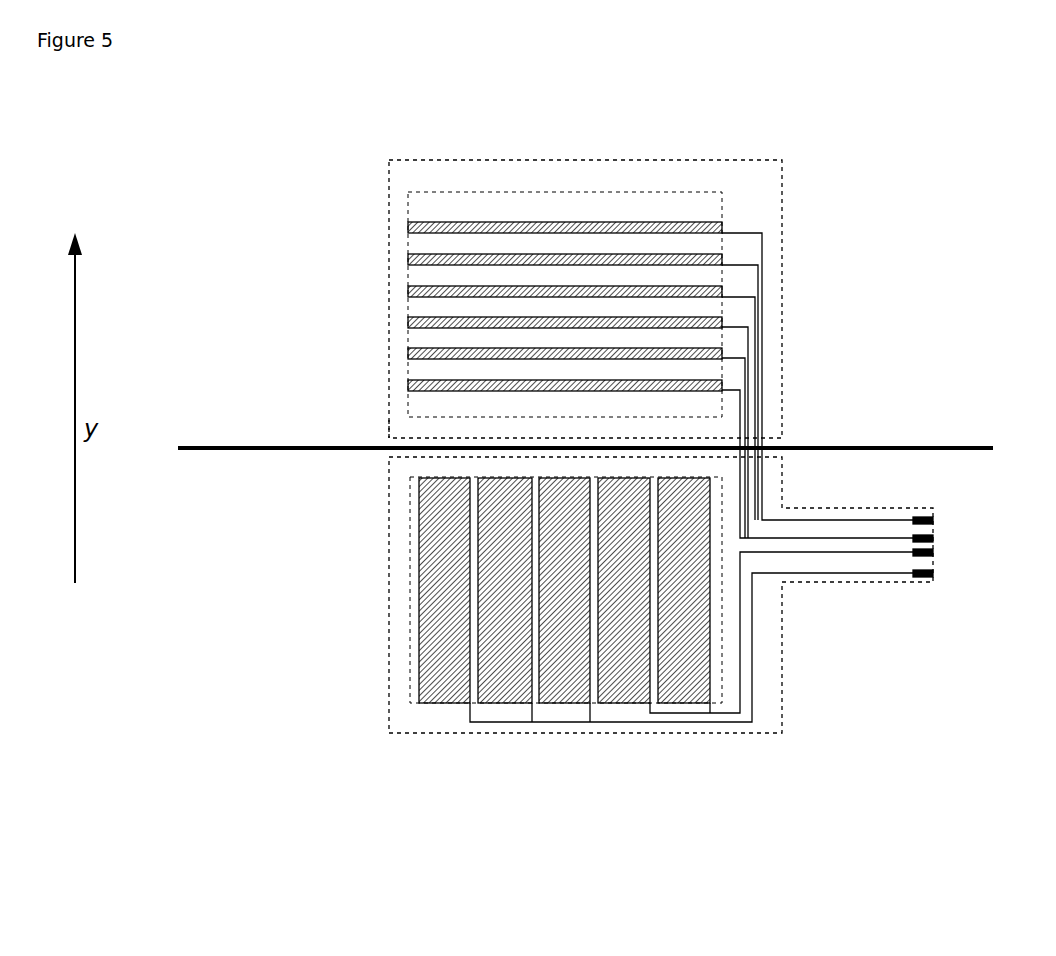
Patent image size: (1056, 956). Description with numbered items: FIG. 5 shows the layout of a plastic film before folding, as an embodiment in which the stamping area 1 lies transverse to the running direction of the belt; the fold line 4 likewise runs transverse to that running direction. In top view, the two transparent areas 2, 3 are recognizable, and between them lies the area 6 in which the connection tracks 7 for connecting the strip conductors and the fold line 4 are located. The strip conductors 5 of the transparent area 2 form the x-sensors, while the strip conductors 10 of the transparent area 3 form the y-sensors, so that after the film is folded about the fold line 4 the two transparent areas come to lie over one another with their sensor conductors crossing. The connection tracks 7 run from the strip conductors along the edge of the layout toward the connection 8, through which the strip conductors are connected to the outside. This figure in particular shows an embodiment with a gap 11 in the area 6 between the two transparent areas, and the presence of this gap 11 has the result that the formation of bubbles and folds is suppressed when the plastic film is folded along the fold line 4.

The stamping area 1 is at (389, 392).
The transparent area 2 is at (565, 192).
The transparent area 3 is at (410, 592).
The fold line 4 is at (178, 447).
The strip conductors 5 is at (540, 385).
The area 6 is at (797, 442).
The connection tracks 7 is at (760, 420).
The connection 8 is at (933, 538).
The strip conductors 10 is at (442, 680).
The gap 11 is at (385, 438).